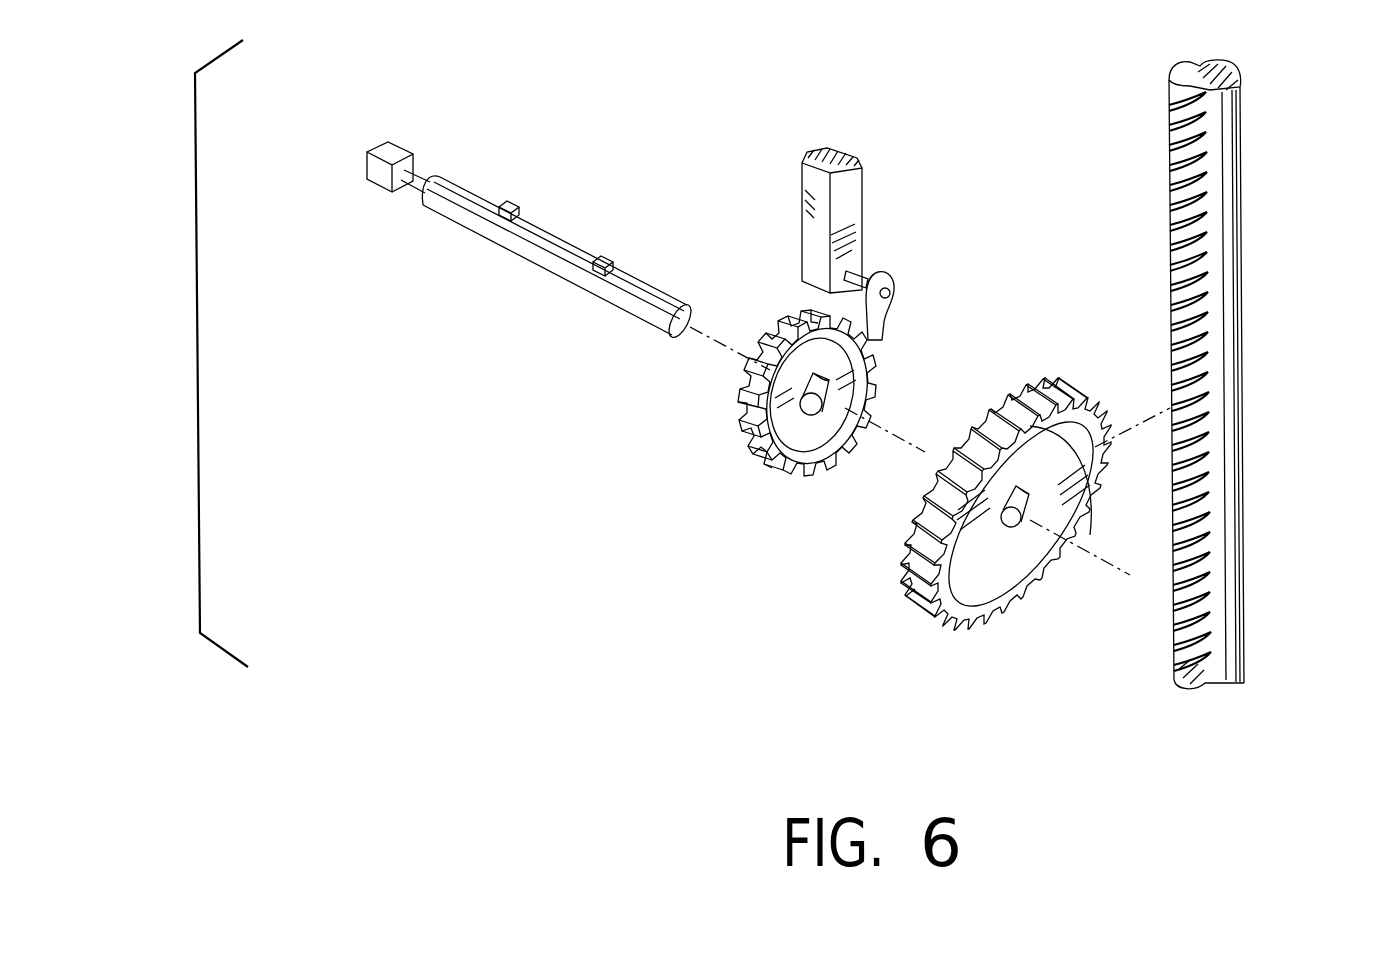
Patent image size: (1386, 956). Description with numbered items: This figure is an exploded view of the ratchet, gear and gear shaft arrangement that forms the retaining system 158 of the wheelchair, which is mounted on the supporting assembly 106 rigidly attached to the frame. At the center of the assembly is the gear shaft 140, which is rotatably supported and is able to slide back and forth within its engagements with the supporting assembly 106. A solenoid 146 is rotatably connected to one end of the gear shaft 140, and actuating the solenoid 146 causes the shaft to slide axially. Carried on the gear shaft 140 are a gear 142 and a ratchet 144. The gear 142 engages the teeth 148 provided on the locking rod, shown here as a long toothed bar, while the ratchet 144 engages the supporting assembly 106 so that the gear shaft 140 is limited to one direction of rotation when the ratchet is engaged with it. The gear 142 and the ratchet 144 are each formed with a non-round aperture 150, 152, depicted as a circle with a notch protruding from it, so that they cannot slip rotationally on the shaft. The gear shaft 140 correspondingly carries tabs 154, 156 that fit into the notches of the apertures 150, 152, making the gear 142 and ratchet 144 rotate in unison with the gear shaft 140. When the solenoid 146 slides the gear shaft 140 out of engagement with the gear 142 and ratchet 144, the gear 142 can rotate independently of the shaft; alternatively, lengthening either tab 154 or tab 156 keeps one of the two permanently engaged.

The supporting assembly 106 is at (862, 200).
The gear shaft 140 is at (562, 240).
The gear 142 is at (913, 590).
The ratchet 144 is at (747, 430).
The solenoid 146 is at (405, 147).
The teeth 148 is at (1200, 268).
The aperture 150 is at (1015, 525).
The aperture 152 is at (806, 477).
The tab 154 is at (606, 258).
The tab 156 is at (512, 203).
The retaining system 158 is at (187, 353).